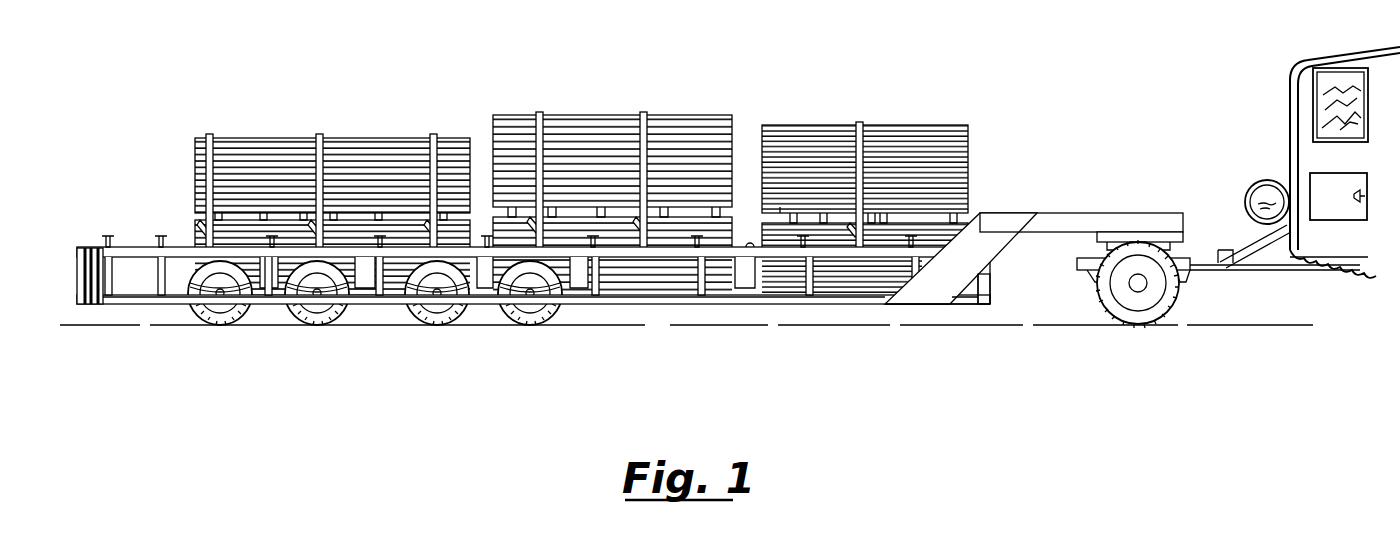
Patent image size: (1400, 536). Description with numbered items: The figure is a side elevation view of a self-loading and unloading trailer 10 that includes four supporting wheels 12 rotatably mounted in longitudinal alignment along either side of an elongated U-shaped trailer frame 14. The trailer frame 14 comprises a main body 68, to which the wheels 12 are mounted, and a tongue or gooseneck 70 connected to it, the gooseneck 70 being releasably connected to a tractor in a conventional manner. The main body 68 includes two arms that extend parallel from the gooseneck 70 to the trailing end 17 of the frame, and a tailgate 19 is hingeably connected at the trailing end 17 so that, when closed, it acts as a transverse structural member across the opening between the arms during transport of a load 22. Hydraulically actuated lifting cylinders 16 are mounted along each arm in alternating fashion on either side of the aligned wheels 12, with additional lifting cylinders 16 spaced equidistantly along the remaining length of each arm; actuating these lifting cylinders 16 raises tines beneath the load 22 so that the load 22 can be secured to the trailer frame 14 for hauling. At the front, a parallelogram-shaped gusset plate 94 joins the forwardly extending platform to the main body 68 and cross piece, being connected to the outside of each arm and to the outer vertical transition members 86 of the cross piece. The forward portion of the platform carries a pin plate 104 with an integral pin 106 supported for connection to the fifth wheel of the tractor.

The self-loading and unloading trailer 10 is at (962, 66).
The supporting wheels 12 is at (215, 326).
The trailer frame 14 is at (747, 305).
The lifting cylinders 16 is at (155, 277).
The trailing end 17 is at (105, 305).
The tailgate 19 is at (77, 282).
The load 22 is at (352, 137).
The main body 68 is at (745, 244).
The gooseneck 70 is at (1090, 213).
The vertical transition members 86 is at (986, 290).
The gusset plate 94 is at (970, 279).
The pin plate 104 is at (1170, 243).
The pin 106 is at (1097, 238).